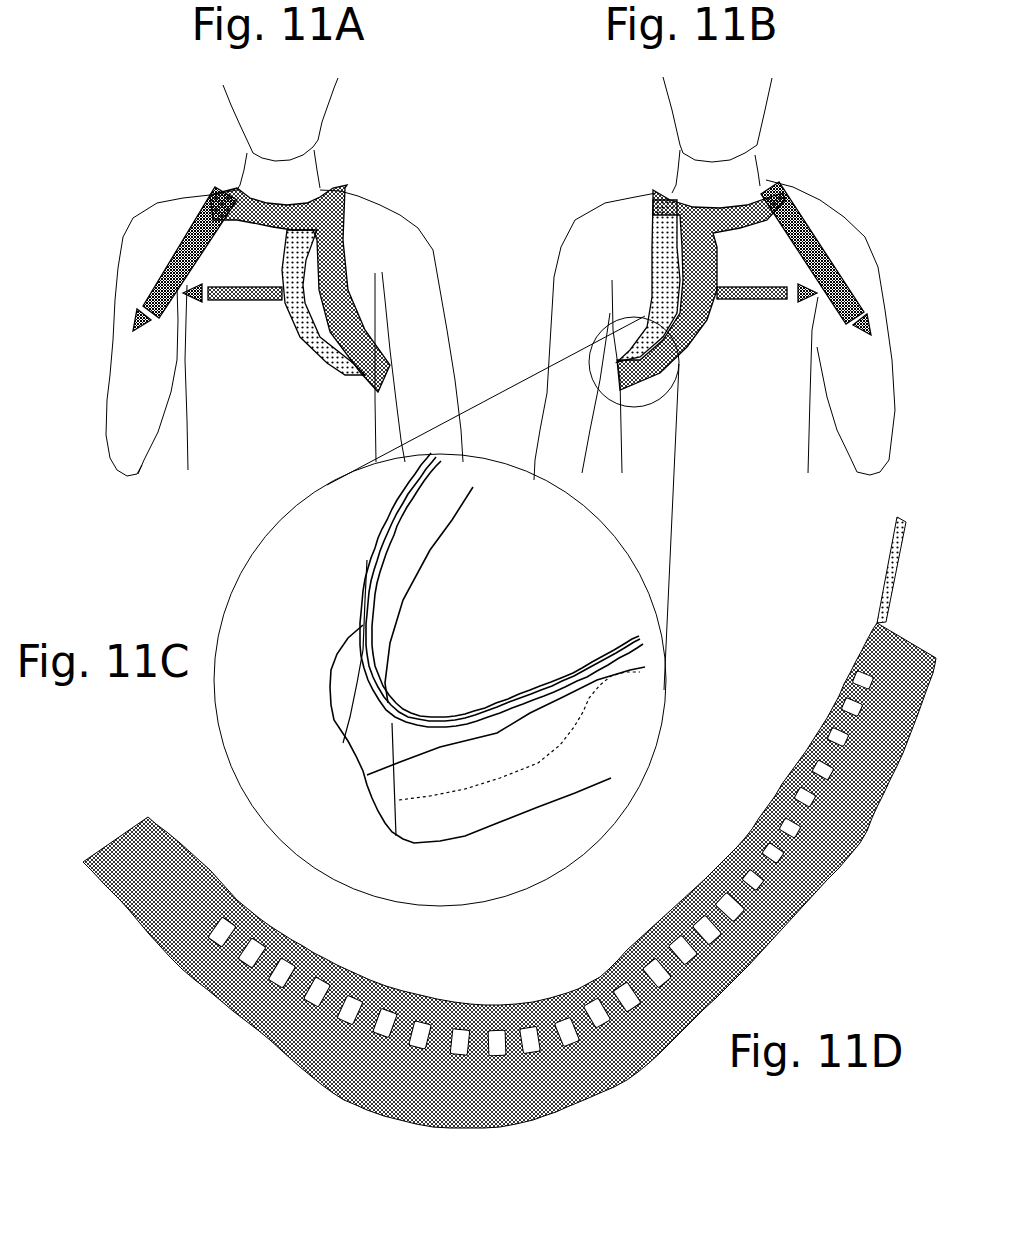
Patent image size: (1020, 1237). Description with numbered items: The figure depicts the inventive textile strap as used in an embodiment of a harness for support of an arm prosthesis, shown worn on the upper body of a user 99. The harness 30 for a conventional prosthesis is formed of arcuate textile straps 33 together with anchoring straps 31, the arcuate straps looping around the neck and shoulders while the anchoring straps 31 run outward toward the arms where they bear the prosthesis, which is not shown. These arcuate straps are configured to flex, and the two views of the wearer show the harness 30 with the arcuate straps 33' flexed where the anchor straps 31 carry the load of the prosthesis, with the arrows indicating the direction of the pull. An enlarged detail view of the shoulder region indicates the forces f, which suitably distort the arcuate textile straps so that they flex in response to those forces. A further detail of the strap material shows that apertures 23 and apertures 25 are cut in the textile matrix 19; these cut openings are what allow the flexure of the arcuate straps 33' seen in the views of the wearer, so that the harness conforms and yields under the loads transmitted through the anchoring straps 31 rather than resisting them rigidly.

In FIG. 11A, the user / wearer body 99 is at (268, 114).
In FIG. 11B, the user / wearer body 99 is at (709, 106).
In FIG. 11A, the harness 30 is at (330, 180).
In FIG. 11B, the harness 30 is at (760, 172).
In FIG. 11A, the anchoring straps 31 is at (212, 197).
In FIG. 11B, the anchoring straps 31 is at (843, 290).
In FIG. 11A, the arcuate textile straps 33 is at (302, 259).
In FIG. 11B, the arcuate textile straps 33 is at (673, 337).
In FIG. 11A, the arcuate straps 33' is at (330, 286).
In FIG. 11B, the arcuate straps 33' is at (629, 281).
In FIG. 11C, the forces f is at (359, 629).
In FIG. 11D, the textile matrix 19 is at (507, 1005).
In FIG. 11D, the apertures 25 is at (592, 968).
In FIG. 11D, the apertures 23 is at (638, 948).